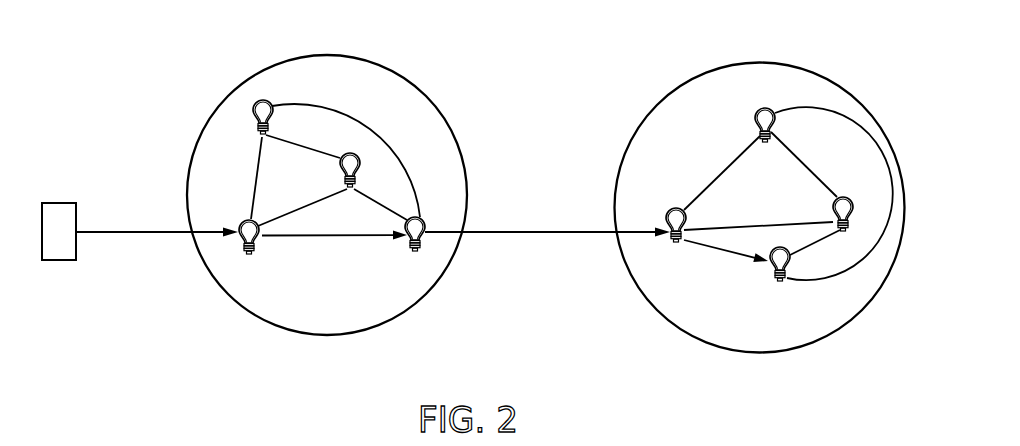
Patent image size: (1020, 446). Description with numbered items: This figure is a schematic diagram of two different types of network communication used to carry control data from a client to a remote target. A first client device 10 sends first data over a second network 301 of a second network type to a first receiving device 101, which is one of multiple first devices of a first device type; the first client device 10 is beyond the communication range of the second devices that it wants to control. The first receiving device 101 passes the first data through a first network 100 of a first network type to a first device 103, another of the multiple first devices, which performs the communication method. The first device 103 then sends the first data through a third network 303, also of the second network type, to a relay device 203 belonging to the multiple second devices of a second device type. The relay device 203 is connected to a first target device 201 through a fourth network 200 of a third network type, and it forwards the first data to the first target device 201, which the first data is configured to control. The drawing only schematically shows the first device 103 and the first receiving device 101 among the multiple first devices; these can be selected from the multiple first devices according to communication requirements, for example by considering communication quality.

The first client device 10 is at (72, 203).
The first network 100 is at (330, 178).
The fourth network 200 is at (760, 194).
The first receiving device 101 is at (247, 256).
The first device 103 is at (412, 254).
The first target device 201 is at (780, 283).
The relay device 203 is at (675, 246).
The second network 301 is at (120, 234).
The third network 303 is at (543, 233).